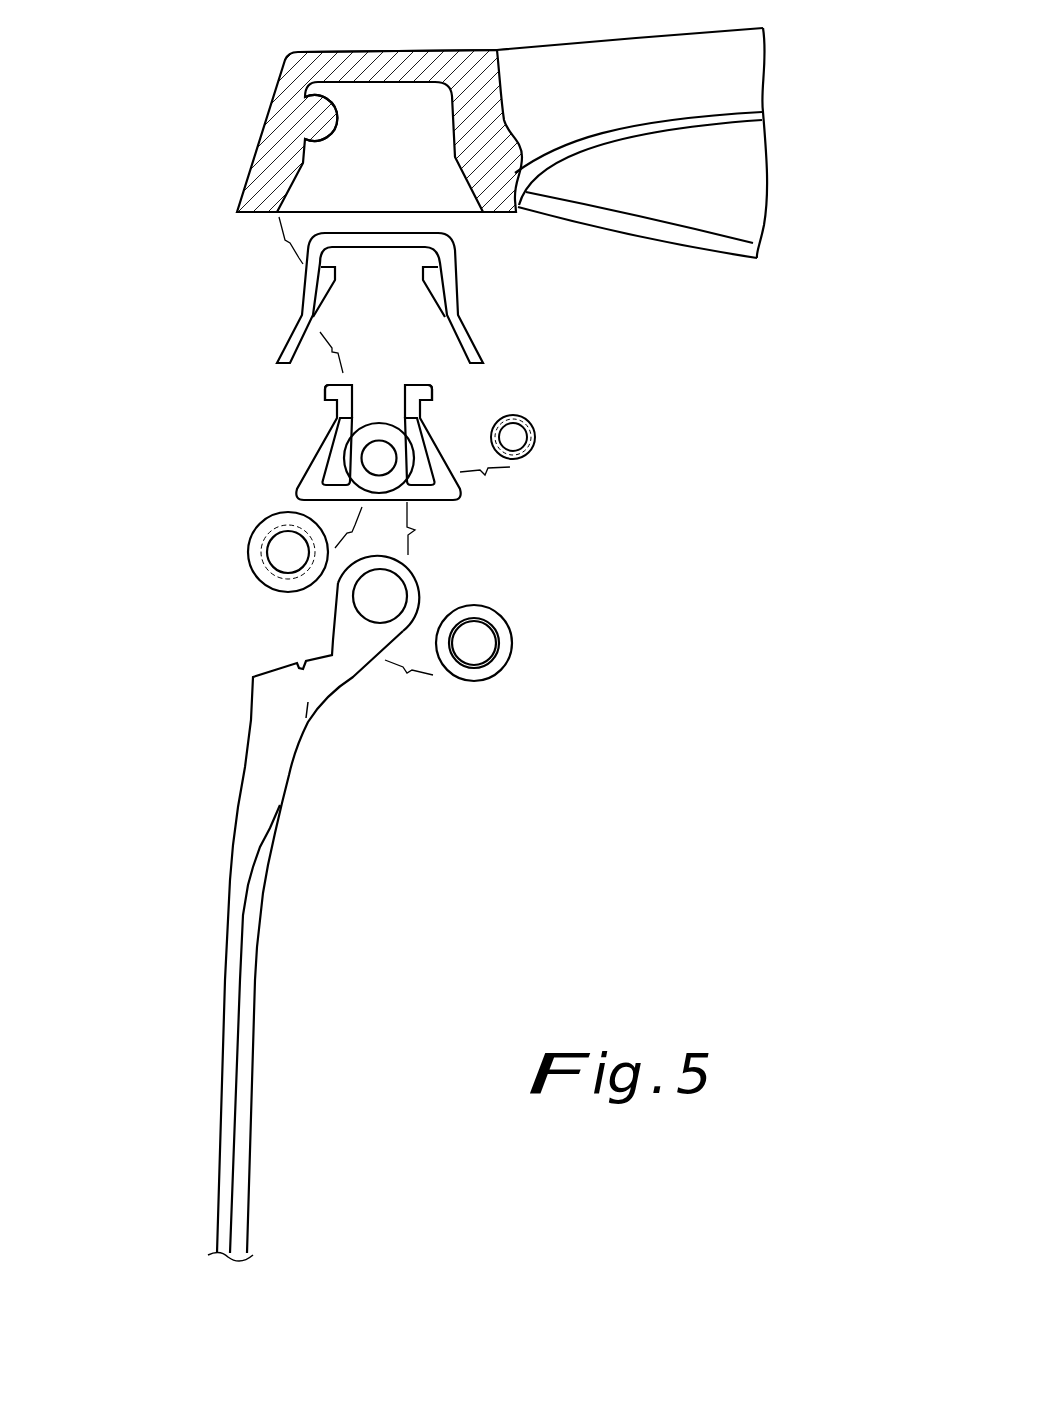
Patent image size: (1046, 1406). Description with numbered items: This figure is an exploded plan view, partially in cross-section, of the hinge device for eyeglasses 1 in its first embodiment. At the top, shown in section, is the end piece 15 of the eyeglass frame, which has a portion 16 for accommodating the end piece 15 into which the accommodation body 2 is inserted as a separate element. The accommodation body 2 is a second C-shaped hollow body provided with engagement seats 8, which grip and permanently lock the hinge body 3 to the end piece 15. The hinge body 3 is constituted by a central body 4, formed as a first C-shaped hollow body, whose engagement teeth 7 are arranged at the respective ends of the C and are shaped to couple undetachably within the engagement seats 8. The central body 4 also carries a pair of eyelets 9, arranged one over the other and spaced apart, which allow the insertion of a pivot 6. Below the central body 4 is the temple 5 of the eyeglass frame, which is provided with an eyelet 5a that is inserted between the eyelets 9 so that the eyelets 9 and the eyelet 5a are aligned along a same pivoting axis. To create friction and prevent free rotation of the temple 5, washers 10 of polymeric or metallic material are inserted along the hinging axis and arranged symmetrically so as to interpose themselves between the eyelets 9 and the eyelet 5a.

The hinge device for eyeglasses 1 is at (152, 219).
The accommodation body 2 is at (295, 343).
The hinge body 3 is at (230, 415).
The central body 4 is at (298, 493).
The temple 5 is at (232, 1115).
The eyelet 5a is at (347, 600).
The pivot 6 is at (516, 440).
The engagement teeth 7 is at (338, 385).
The engagement seats 8 is at (326, 283).
The eyelets 9 is at (379, 474).
The washers 10 is at (255, 552).
The end piece 15 is at (400, 65).
The portion for accommodating the end piece 16 is at (325, 99).